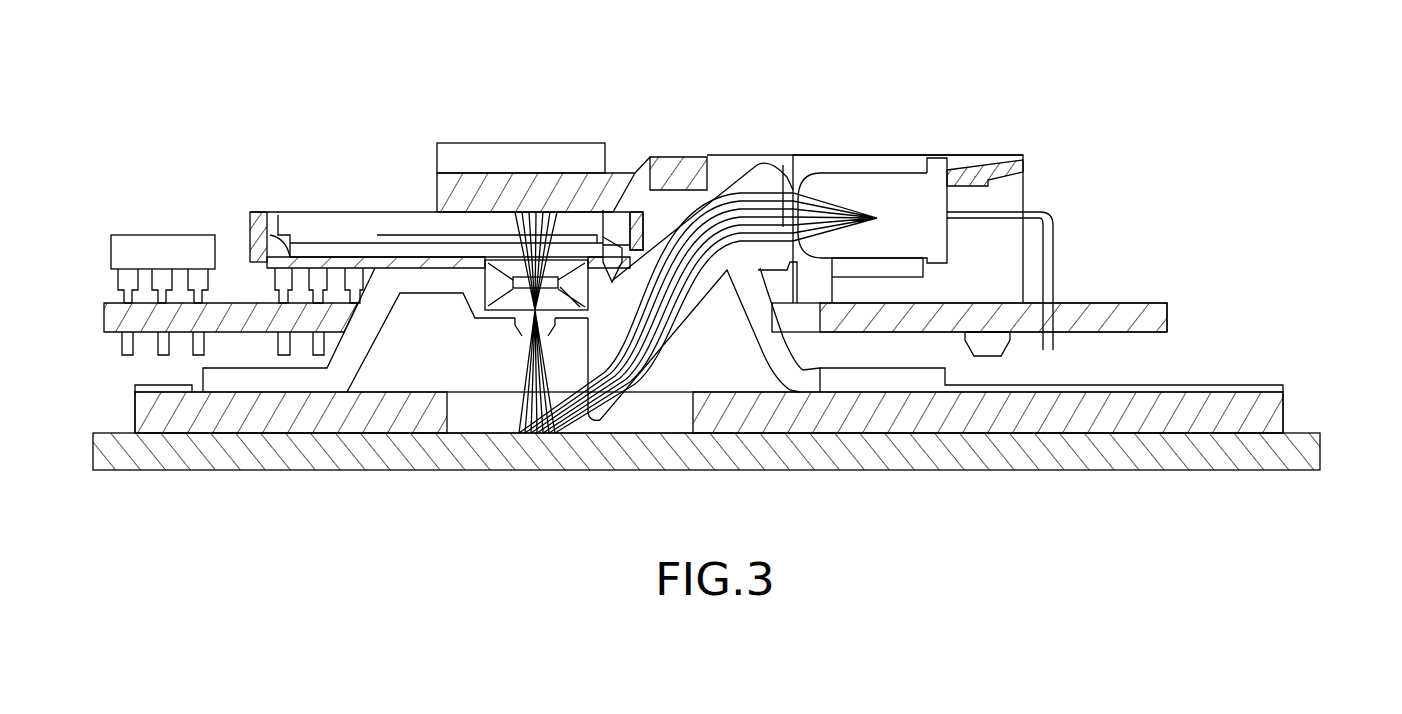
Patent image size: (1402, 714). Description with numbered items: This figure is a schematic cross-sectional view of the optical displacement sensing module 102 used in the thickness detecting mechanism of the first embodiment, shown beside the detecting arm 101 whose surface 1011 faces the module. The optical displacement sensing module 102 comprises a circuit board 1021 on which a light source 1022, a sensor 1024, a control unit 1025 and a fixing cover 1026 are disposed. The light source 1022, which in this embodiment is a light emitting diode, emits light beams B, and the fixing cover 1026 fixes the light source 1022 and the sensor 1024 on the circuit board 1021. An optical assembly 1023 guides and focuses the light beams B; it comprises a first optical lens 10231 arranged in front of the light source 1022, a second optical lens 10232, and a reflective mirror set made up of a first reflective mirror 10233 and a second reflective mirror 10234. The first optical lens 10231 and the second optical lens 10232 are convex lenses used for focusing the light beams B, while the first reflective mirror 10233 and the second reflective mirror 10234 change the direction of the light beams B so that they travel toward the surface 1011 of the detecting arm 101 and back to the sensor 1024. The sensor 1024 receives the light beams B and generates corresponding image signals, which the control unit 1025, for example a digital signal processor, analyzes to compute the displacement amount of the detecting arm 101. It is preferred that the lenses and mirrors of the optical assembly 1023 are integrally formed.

The detecting arm 101 is at (1290, 448).
The surface 1011 is at (512, 425).
The optical displacement sensing module 102 is at (851, 63).
The circuit board 1021 is at (1115, 323).
The light source 1022 is at (897, 192).
The optical assembly 1023 is at (805, 378).
The first optical lens 10231 is at (783, 155).
The second optical lens 10232 is at (510, 312).
The first reflective mirror 10233 is at (657, 215).
The second reflective mirror 10234 is at (653, 362).
The sensor 1024 is at (415, 222).
The control unit 1025 is at (153, 245).
The fixing cover 1026 is at (812, 165).
The light beams B is at (790, 205).